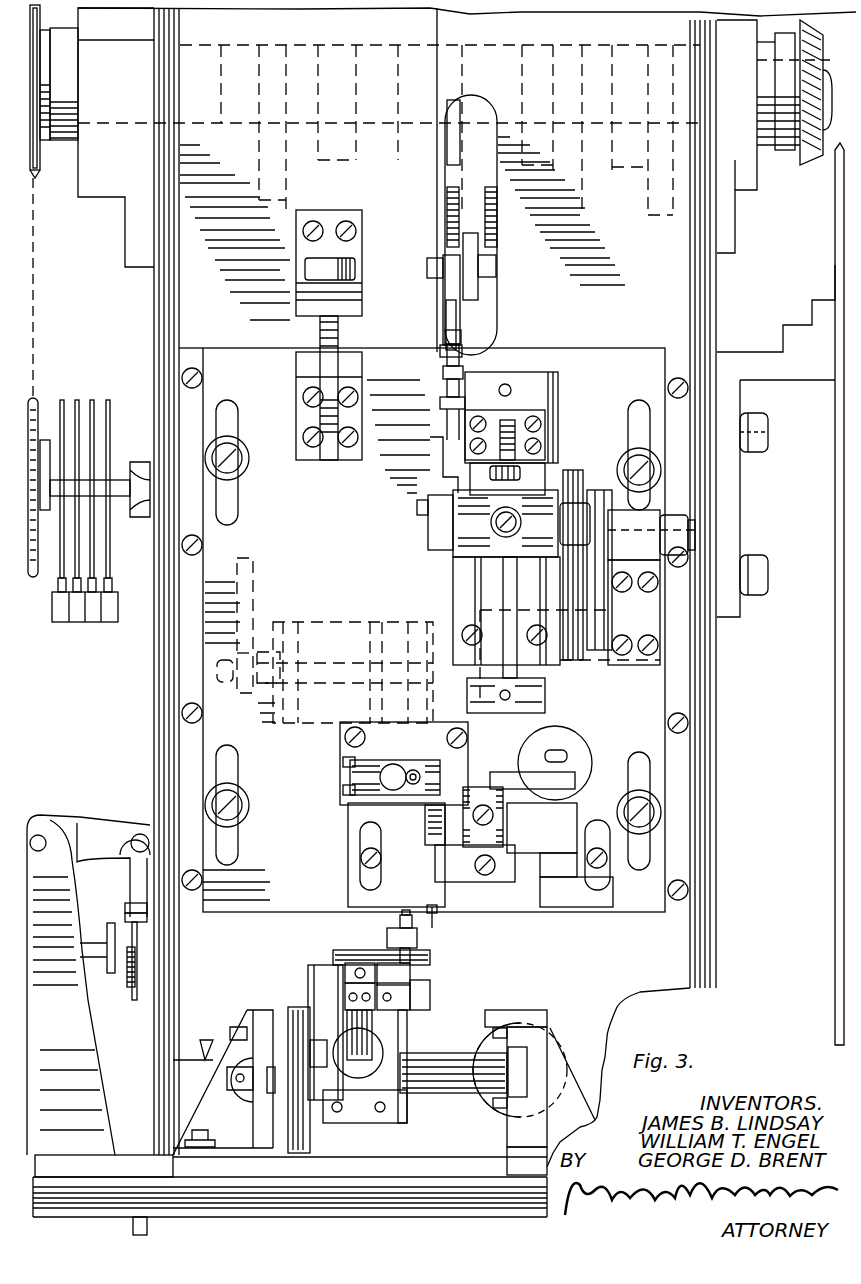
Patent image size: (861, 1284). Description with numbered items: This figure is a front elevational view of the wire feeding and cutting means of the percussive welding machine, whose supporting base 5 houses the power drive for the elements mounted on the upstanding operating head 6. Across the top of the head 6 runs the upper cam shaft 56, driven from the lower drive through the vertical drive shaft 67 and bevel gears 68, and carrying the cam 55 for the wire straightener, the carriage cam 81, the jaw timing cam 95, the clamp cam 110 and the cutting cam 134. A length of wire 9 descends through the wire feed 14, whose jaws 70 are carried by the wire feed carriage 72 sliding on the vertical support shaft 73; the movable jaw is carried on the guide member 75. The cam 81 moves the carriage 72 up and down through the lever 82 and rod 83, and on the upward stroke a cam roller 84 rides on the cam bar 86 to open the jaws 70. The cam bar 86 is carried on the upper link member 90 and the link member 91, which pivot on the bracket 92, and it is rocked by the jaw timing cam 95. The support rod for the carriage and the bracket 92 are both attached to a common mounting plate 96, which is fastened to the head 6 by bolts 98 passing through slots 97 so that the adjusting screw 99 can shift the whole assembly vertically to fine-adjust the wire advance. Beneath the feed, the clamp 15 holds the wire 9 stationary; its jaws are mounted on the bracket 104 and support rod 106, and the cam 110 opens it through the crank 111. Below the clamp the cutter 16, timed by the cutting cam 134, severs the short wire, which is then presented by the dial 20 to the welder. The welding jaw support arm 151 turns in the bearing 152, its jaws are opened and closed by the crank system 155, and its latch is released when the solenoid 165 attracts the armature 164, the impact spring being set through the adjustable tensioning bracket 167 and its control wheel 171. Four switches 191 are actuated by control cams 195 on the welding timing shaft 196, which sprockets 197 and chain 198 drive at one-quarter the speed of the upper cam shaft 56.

The supporting base 5 is at (340, 38).
The operating head 6 is at (704, 823).
The wire 9 is at (437, 72).
The wire feed 14 is at (573, 440).
The clamp 15 is at (448, 775).
The cutter 16 is at (470, 872).
The dial 20 is at (362, 478).
The cam 55 is at (308, 82).
The upper cam shaft 56 is at (700, 90).
The vertical drive shaft 67 is at (835, 218).
The bevel gears 68 is at (800, 140).
The jaws 70 is at (432, 440).
The wire feed carriage 72 is at (522, 418).
The vertical support shaft 73 is at (507, 578).
The guide member 75 is at (440, 540).
The cam 81 is at (405, 72).
The lever 82 is at (470, 298).
The rod 83 is at (446, 320).
The cam roller 84 is at (572, 503).
The cam bar 86 is at (600, 626).
The upper link member 90 is at (598, 490).
The link member 91 is at (592, 722).
The bracket 92 is at (655, 678).
The jaw timing cam 95 is at (720, 40).
The mounting plate 96 is at (330, 868).
The slots 97 is at (234, 496).
The bolts 98 is at (235, 452).
The adjusting screw 99 is at (308, 272).
The bracket 104 is at (342, 748).
The support rod 106 is at (396, 772).
The cam 110 is at (215, 37).
The crank 111 is at (247, 617).
The cutting cam 134 is at (570, 31).
The support arm 151 is at (438, 946).
The bearing 152 is at (128, 983).
The crank system 155 is at (92, 819).
The armature 164 is at (355, 1020).
The solenoid 165 is at (365, 1067).
The adjustable tensioning bracket 167 is at (443, 1053).
The control wheel 171 is at (518, 1023).
The switches 191 is at (62, 612).
The control cam 195 is at (92, 400).
The welding timing shaft 196 is at (85, 483).
The sprockets 197 is at (45, 40).
The chain 198 is at (33, 300).